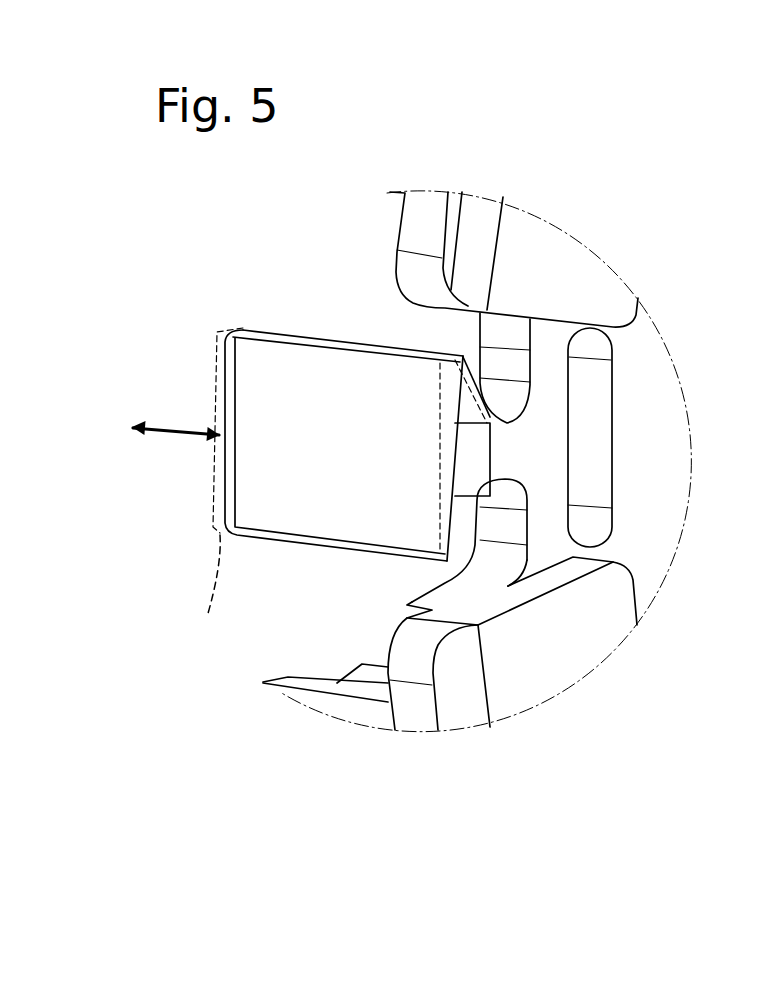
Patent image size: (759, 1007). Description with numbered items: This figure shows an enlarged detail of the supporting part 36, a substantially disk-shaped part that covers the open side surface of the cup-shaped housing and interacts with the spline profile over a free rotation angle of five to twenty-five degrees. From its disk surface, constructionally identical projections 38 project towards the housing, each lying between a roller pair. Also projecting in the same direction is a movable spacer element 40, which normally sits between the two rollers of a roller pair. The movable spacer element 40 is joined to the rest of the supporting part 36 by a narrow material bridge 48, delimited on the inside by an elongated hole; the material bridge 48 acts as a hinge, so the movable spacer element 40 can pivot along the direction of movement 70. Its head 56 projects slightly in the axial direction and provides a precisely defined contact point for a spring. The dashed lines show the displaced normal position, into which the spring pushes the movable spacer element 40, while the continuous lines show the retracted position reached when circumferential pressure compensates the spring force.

The supporting part 36 is at (558, 645).
The projection 38 is at (363, 713).
The movable spacer element 40 is at (252, 508).
The material bridge 48 is at (545, 350).
The head 56 is at (470, 458).
The direction of movement 70 is at (173, 427).